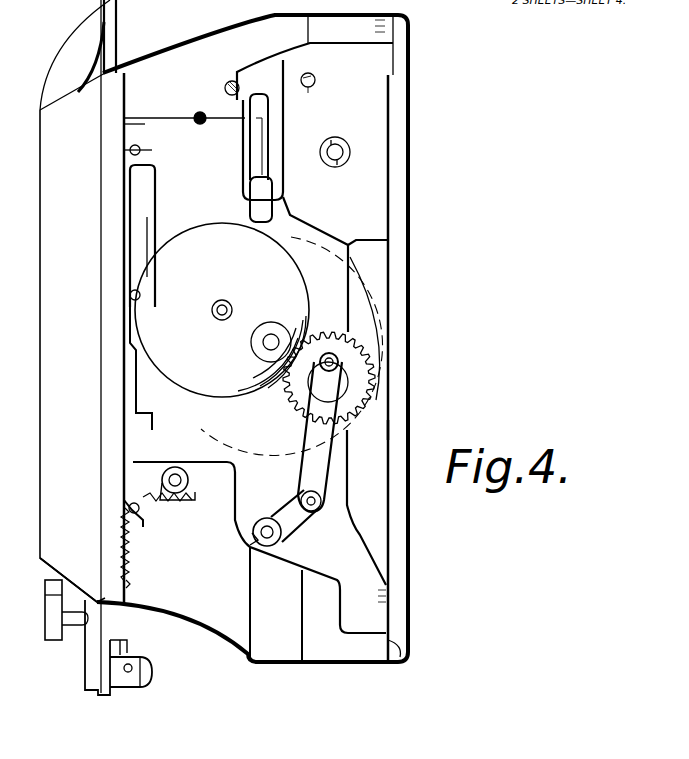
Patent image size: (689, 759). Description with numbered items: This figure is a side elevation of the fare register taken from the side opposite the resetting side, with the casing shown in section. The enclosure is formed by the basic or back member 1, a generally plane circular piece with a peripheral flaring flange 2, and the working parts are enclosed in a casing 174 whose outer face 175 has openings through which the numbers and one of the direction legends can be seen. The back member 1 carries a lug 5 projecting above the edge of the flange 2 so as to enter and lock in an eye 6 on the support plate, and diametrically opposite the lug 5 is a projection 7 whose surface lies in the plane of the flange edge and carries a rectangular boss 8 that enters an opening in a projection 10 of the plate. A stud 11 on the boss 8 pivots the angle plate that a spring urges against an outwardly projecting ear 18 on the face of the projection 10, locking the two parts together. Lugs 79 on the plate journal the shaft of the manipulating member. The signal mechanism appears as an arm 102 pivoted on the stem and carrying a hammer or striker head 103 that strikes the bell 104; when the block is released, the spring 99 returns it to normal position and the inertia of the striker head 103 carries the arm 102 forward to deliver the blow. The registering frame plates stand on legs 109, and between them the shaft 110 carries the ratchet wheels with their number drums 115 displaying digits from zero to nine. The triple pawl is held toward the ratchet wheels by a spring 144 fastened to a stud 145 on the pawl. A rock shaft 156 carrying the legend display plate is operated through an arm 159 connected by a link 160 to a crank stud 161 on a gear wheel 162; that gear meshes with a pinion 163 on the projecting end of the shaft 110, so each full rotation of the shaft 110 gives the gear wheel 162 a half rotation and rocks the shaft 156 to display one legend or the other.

The basic or back member 1 is at (224, 346).
The peripheral flaring flange 2 is at (55, 578).
The lug 5 is at (93, 47).
The eye 6 is at (120, 20).
The projection 7 is at (88, 673).
The boss 8 is at (120, 643).
The projection 10 is at (100, 695).
The stud 11 is at (143, 677).
The outwardly projecting ear 18 is at (133, 682).
The lugs 79 is at (140, 520).
The spring 99 is at (200, 112).
The arm 102 is at (257, 138).
The hammer or striker head 103 is at (263, 213).
The bell 104 is at (203, 242).
The legs 109 is at (147, 147).
The shaft 110 is at (234, 308).
The number drum 115 is at (383, 333).
The spring 144 is at (168, 500).
The stud 145 is at (197, 496).
The shaft 156 is at (282, 538).
The arm 159 is at (283, 530).
The link 160 is at (321, 492).
The crank stud 161 is at (336, 360).
The gear wheel 162 is at (362, 385).
The pinion 163 is at (269, 323).
The casing 174 is at (243, 657).
The outer face 175 is at (391, 428).